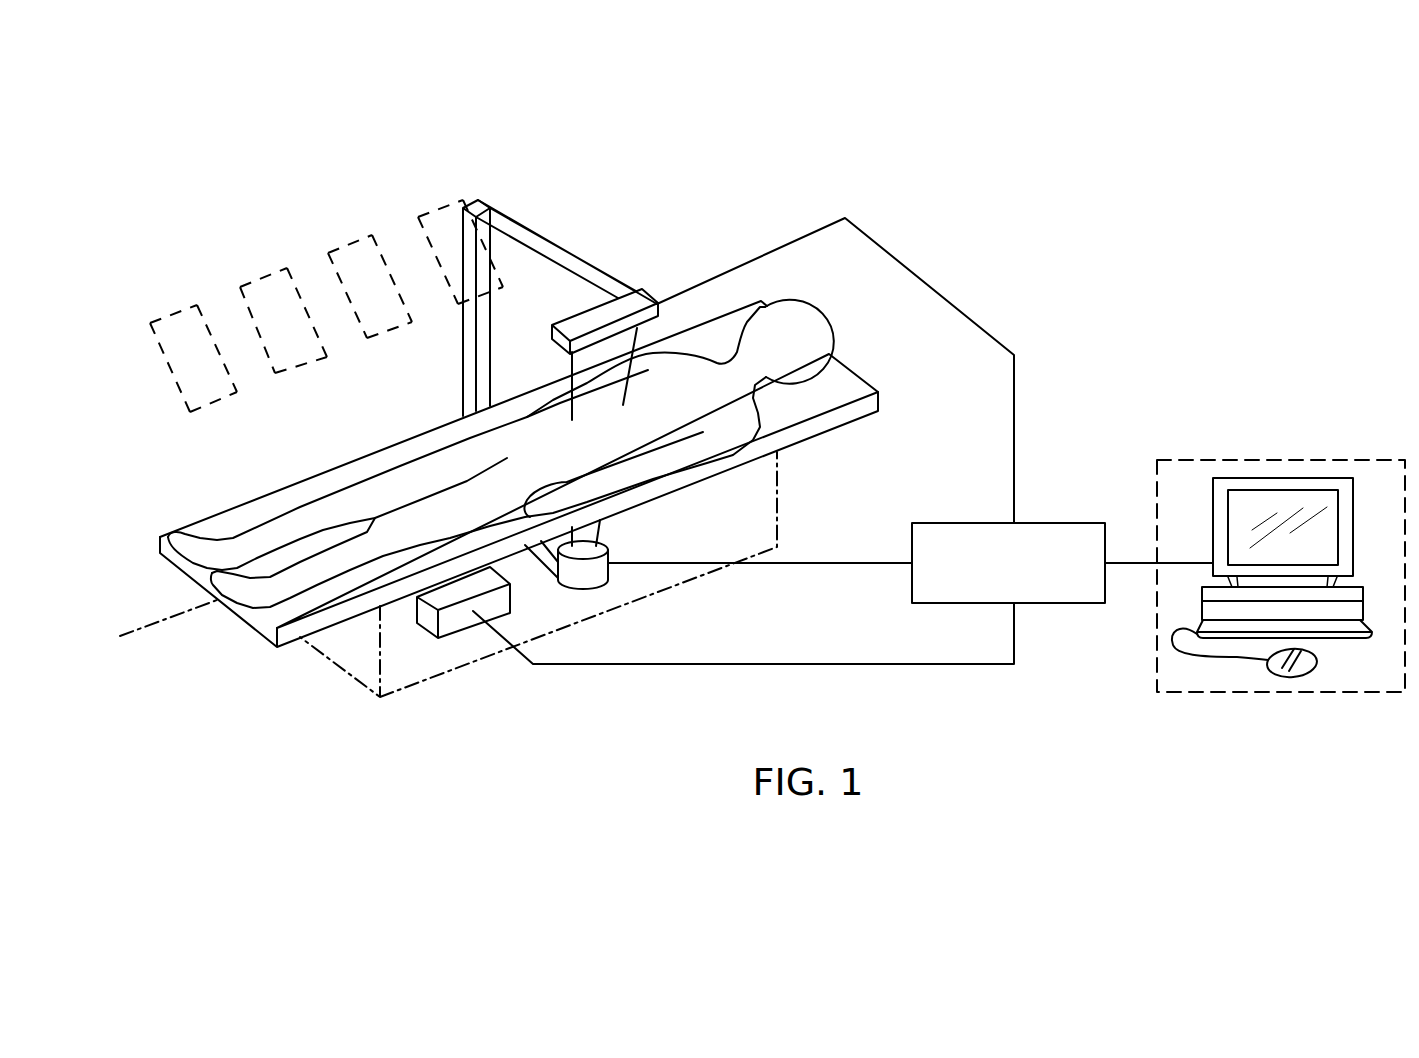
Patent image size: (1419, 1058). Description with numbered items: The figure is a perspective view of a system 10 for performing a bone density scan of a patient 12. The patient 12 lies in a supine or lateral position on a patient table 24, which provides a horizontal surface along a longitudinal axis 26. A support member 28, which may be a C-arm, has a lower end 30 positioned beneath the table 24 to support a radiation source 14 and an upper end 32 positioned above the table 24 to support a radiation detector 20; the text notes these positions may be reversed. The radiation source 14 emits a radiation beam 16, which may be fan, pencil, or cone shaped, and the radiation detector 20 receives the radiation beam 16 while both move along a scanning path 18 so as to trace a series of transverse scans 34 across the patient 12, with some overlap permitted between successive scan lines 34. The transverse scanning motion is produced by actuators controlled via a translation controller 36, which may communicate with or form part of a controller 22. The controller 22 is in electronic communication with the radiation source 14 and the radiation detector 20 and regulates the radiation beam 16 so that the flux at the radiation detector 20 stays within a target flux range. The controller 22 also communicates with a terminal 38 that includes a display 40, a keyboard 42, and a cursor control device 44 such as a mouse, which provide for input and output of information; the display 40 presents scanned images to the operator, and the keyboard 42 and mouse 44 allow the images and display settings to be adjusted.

The system 10 is at (903, 202).
The patient 12 is at (278, 527).
The radiation source 14 is at (597, 577).
The radiation beam 16 is at (641, 333).
The scanning path 18 is at (267, 278).
The radiation detector 20 is at (622, 292).
The controller 22 is at (1062, 563).
The patient table 24 is at (318, 623).
The longitudinal axis 26 is at (172, 618).
The support member 28 is at (503, 212).
The lower end 30 is at (535, 563).
The upper end 32 is at (541, 247).
The transverse scans 34 is at (217, 333).
The translation controller 36 is at (458, 620).
The terminal 38 is at (1252, 457).
The display 40 is at (1318, 488).
The keyboard 42 is at (1232, 627).
The cursor control device 44 is at (1310, 665).